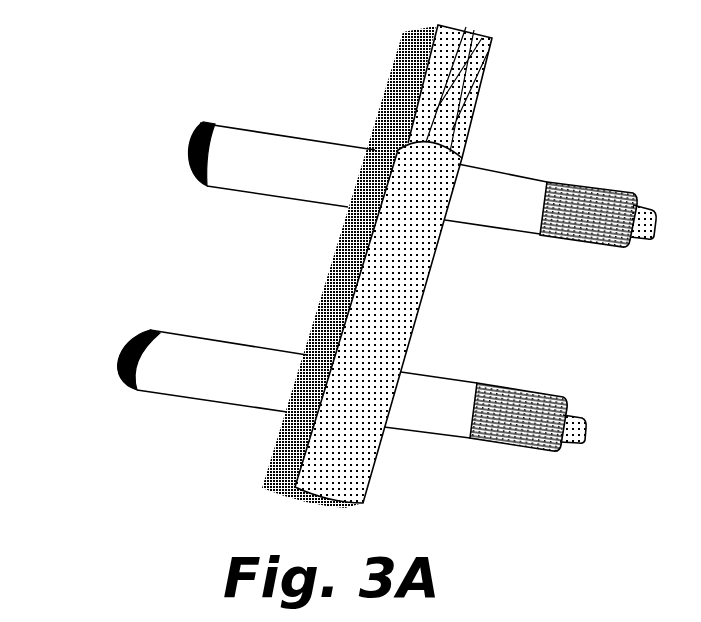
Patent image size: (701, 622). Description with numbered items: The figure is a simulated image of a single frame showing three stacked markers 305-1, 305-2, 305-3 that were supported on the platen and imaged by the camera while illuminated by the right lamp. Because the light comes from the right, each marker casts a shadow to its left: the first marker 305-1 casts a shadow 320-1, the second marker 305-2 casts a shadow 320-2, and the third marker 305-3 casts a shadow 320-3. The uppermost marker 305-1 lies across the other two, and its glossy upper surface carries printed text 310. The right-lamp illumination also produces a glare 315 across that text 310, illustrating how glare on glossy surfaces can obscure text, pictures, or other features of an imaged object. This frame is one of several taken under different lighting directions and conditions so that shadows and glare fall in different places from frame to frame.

The marker 305-1 is at (428, 266).
The marker 305-2 is at (381, 174).
The marker 305-3 is at (309, 379).
The shadow 320-1 is at (392, 92).
The shadow 320-2 is at (188, 152).
The shadow 320-3 is at (117, 357).
The text 310 is at (311, 329).
The glare 315 is at (360, 290).